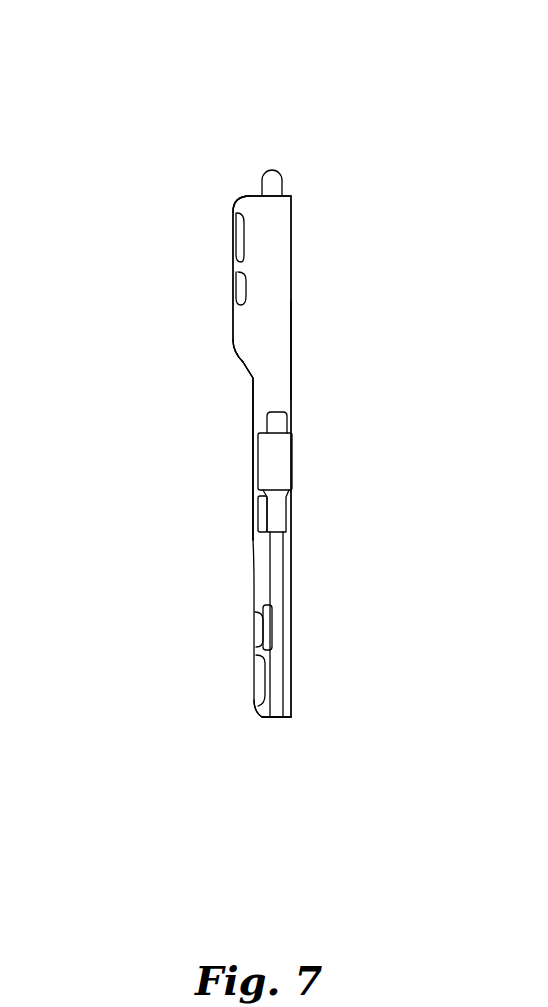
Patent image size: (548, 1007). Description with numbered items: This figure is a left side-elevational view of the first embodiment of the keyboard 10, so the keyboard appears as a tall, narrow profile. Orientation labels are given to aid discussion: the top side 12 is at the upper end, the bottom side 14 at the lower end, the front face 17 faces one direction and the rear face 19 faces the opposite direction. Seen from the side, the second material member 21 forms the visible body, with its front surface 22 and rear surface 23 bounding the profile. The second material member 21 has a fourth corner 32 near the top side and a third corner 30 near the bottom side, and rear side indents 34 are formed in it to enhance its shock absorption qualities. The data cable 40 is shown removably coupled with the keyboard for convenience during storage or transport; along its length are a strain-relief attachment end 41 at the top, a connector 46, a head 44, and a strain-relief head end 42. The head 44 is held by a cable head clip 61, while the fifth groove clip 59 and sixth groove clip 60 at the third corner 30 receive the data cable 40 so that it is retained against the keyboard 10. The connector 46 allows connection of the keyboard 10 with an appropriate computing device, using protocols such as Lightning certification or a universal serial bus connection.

The keyboard 10 is at (151, 79).
The top side 12 is at (257, 137).
The bottom side 14 is at (280, 779).
The front face 17 is at (343, 343).
The rear face 19 is at (169, 400).
The second material member 21 is at (277, 298).
The front surface 22 is at (292, 260).
The rear surface 23 is at (237, 328).
The third corner 30 is at (301, 731).
The fourth corner 32 is at (224, 189).
The rear side indents 34 is at (236, 236).
The data cable 40 is at (277, 574).
The strain-relief attachment end 41 is at (282, 181).
The strain-relief head end 42 is at (281, 515).
The head 44 is at (283, 463).
The connector 46 is at (290, 418).
The fifth groove clip 59 is at (266, 720).
The sixth groove clip 60 is at (269, 630).
The cable head clip 61 is at (258, 508).